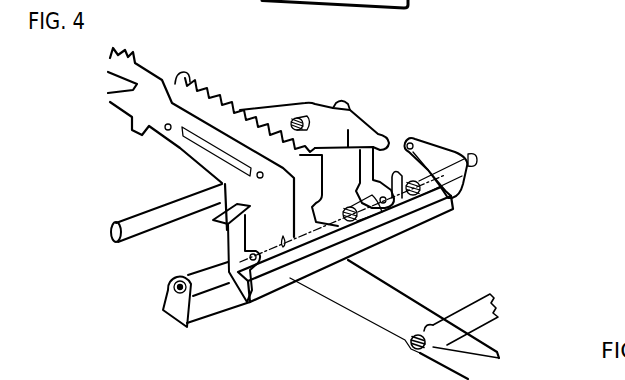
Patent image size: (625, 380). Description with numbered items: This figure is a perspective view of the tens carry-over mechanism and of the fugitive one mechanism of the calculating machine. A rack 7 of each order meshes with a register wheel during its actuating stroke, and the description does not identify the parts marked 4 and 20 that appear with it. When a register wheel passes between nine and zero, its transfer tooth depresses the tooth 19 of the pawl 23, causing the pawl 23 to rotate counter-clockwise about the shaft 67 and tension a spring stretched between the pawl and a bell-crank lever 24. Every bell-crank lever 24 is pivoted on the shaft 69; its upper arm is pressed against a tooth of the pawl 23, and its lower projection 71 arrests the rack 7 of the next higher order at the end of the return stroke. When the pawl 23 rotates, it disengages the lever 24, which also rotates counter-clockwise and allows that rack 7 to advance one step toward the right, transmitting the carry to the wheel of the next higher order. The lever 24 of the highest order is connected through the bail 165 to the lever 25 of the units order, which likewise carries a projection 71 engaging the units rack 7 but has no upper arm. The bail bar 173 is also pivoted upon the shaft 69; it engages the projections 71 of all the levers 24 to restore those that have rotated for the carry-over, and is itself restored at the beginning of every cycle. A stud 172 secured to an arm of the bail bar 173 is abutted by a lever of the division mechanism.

The arm 4 is at (143, 77).
The rack 7 is at (215, 102).
The tooth 19 is at (187, 72).
The rod 20 is at (167, 210).
The pawl 23 is at (278, 112).
The bell-crank lever 24 is at (362, 194).
The lever of the units order 25 is at (437, 192).
The shaft 67 is at (340, 104).
The shaft 69 is at (478, 157).
The projection 71 is at (397, 172).
The bail 165 is at (433, 207).
The stud 172 is at (412, 140).
The bail bar 173 is at (208, 305).